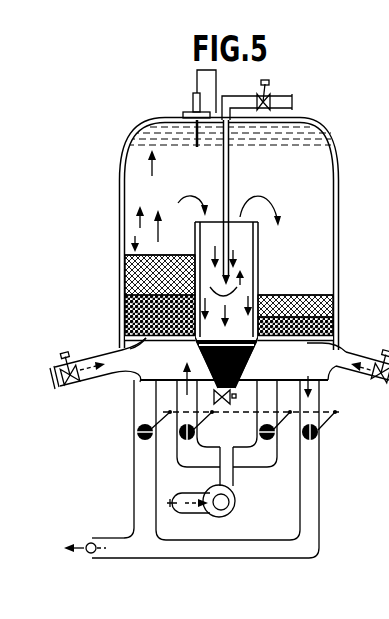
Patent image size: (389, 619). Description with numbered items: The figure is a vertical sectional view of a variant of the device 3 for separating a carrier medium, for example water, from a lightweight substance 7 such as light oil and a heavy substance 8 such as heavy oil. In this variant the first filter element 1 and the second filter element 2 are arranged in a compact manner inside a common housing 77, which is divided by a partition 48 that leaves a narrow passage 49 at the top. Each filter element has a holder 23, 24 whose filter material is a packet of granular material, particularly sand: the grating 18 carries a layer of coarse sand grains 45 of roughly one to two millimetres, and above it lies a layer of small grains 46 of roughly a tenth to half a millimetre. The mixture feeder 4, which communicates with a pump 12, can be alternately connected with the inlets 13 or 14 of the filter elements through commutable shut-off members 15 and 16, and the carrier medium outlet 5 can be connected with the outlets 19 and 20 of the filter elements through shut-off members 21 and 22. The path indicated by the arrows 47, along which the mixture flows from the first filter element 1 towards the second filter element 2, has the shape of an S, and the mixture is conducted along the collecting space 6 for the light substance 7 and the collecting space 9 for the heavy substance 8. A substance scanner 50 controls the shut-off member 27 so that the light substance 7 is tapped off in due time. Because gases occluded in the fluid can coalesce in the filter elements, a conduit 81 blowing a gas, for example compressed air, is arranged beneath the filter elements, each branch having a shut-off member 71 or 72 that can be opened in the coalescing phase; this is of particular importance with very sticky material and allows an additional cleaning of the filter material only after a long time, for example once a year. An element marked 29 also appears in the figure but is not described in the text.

The first filter element 1 is at (118, 283).
The second filter element 2 is at (341, 311).
The device 3 is at (316, 122).
The mixture feeder 4 is at (186, 497).
The carrier medium outlet 5 is at (110, 538).
The collecting space for light substance 6 is at (141, 120).
The lightweight substance 7 is at (218, 114).
The heavy substance 8 is at (244, 348).
The collecting space for heavy substance 9 is at (203, 364).
The pump 12 is at (234, 506).
The inlet of first filter element 13 is at (180, 413).
The inlet of second filter element 14 is at (268, 383).
The shut-off member 15 is at (195, 434).
The shut-off member 16 is at (260, 436).
The grating 18 is at (168, 340).
The outlet of first filter element 19 is at (133, 393).
The outlet of second filter element 20 is at (315, 397).
The shut-off member 21 is at (137, 436).
The shut-off member 22 is at (318, 435).
The holder 23 is at (134, 236).
The holder 24 is at (293, 284).
The shut-off member 27 is at (266, 92).
The support plate 29 is at (305, 303).
The layer of coarse sand grains 45 is at (122, 312).
The layer of small grains 46 is at (122, 270).
The arrows 47 is at (228, 197).
The partition 48 is at (222, 170).
The narrow passage 49 is at (224, 97).
The substance scanner 50 is at (189, 110).
The shut-off member 71 is at (72, 385).
The shut-off member 72 is at (383, 384).
The common housing 77 is at (118, 203).
The conduit 81 is at (108, 350).